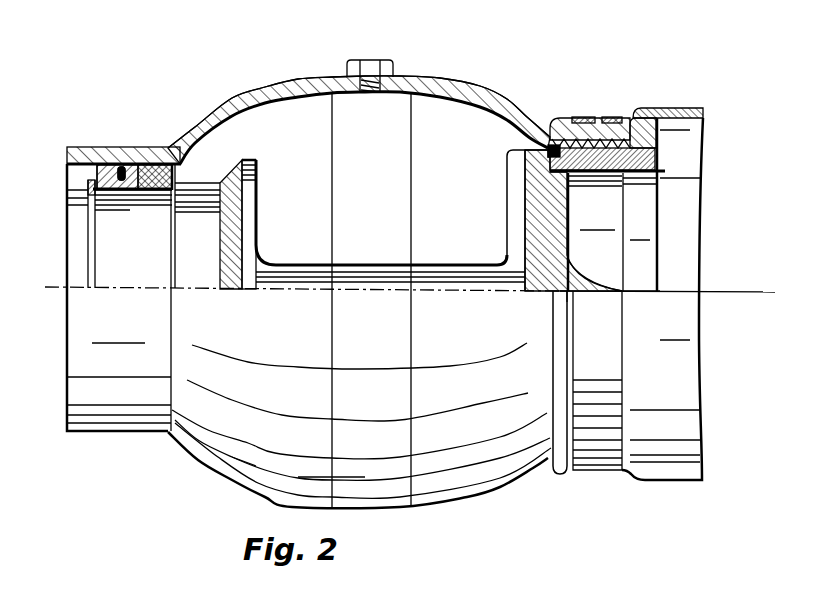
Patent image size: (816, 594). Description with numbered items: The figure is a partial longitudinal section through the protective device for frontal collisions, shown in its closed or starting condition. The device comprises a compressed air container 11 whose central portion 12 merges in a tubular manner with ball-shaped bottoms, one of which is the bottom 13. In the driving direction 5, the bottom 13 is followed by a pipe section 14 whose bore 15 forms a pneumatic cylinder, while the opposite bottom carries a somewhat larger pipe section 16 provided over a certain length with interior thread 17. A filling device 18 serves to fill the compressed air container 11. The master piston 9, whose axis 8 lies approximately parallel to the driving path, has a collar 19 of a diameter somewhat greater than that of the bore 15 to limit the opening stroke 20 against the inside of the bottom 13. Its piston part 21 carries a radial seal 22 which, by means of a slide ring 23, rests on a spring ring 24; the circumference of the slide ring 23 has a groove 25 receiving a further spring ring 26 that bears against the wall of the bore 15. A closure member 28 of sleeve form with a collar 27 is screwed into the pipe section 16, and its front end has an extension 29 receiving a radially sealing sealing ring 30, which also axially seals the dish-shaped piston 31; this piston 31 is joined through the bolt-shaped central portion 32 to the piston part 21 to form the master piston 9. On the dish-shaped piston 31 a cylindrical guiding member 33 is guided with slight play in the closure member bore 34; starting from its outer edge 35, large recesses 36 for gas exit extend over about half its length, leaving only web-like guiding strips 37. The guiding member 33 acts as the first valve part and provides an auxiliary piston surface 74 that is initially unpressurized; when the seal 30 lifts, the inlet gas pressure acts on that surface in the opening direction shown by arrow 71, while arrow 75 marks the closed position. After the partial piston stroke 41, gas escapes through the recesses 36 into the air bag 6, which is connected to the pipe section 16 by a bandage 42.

The driving direction 5 is at (112, 313).
The air bag 6 is at (662, 440).
The axis 8 is at (227, 291).
The master piston 9 is at (307, 278).
The compressed air container 11 is at (450, 423).
The central portion 12 is at (402, 86).
The bottom 13 is at (238, 108).
The pipe section 14 is at (78, 153).
The bore 15 is at (80, 173).
The pipe section 16 is at (598, 118).
The interior thread 17 is at (632, 117).
The filling device 18 is at (368, 88).
The collar 19 is at (250, 162).
The opening stroke 20 is at (198, 157).
The piston part 21 is at (157, 247).
The radial seal 22 is at (150, 170).
The slide ring 23 is at (107, 167).
The spring ring 24 is at (97, 167).
The groove 25 is at (122, 177).
The spring ring 26 is at (121, 173).
The collar 27 is at (662, 108).
The closure member 28 is at (617, 163).
The extension 29 is at (565, 117).
The sealing ring 30 is at (554, 144).
The dish-shaped piston 31 is at (533, 153).
The bolt-shaped central portion 32 is at (377, 281).
The cylindrical guiding member 33 is at (548, 203).
The closure member bore 34 is at (648, 180).
The outer edge 35 is at (625, 263).
The recesses 36 is at (593, 261).
The guiding strips 37 is at (622, 302).
The partial piston stroke 41 is at (532, 217).
The bandage 42 is at (590, 448).
The arrow 71 is at (513, 187).
The auxiliary piston surface 74 is at (525, 190).
The arrow 75 is at (510, 134).